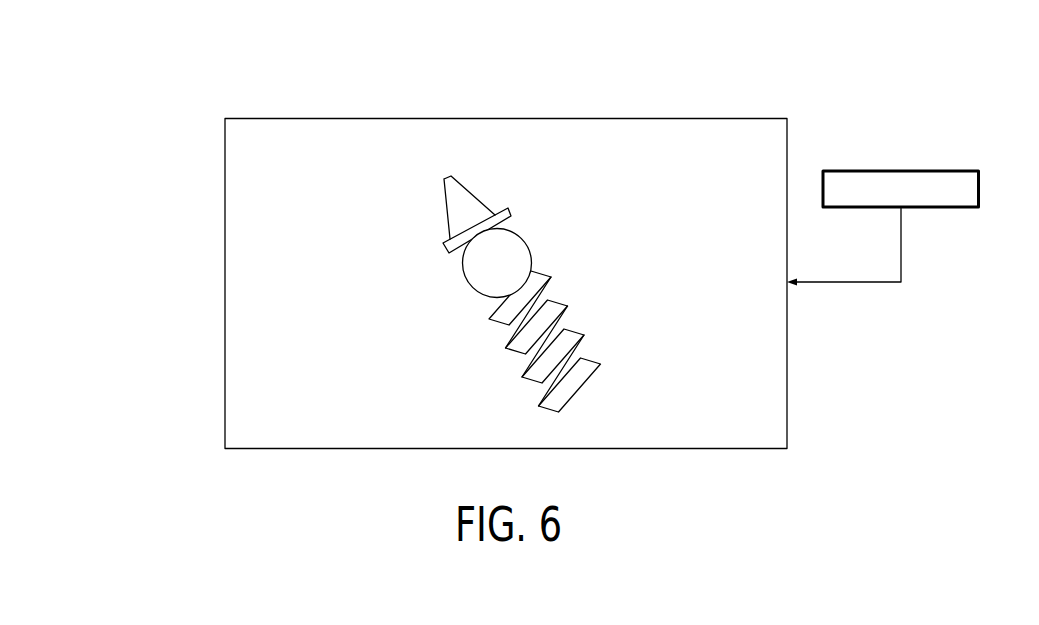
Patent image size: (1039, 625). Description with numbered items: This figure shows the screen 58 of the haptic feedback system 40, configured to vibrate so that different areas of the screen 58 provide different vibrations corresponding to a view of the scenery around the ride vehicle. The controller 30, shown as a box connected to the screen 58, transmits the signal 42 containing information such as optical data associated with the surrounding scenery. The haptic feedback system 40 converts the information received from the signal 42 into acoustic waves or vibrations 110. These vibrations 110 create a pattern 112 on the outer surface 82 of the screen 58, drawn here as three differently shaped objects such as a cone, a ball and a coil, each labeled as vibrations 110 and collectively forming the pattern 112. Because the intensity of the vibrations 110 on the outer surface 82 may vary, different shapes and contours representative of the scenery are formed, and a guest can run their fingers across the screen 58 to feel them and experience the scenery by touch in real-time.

The haptic feedback system 40 is at (172, 72).
The screen 58 is at (199, 158).
The outer surface 82 is at (268, 293).
The pattern 112 is at (408, 228).
The vibrations 110 is at (462, 205).
The controller 30 is at (862, 170).
The signal 42 is at (901, 243).